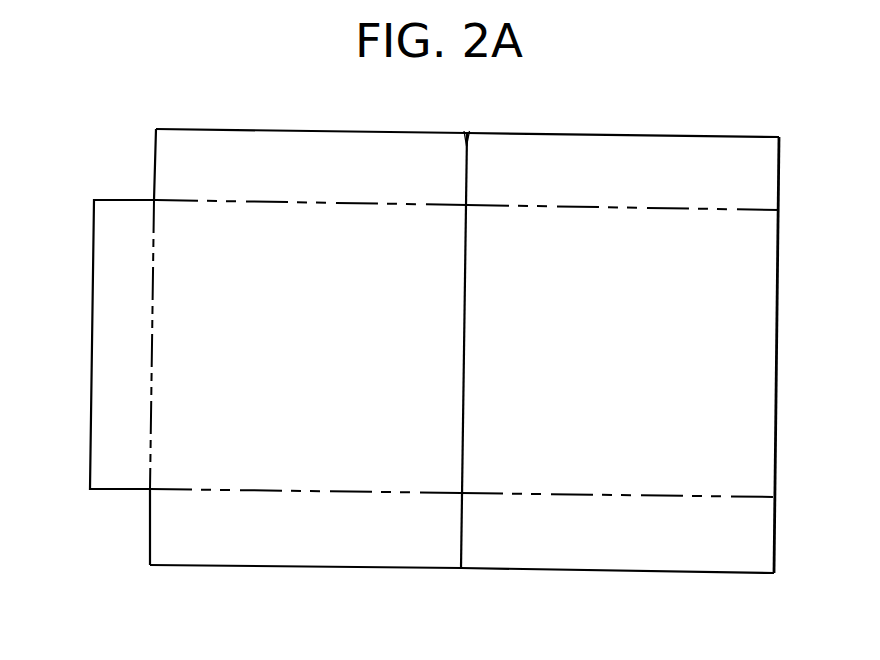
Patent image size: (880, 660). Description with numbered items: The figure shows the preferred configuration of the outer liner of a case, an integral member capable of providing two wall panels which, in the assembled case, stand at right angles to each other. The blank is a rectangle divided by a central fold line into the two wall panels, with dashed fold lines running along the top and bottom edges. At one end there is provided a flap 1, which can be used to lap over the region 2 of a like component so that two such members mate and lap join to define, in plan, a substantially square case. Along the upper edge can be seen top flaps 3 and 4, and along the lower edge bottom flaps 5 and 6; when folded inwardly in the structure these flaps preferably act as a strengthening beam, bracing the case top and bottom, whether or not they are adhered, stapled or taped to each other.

The flap 1 is at (108, 244).
The region 2 is at (762, 423).
The top flap 3 is at (322, 148).
The top flap 4 is at (636, 155).
The bottom flap 5 is at (317, 547).
The bottom flap 6 is at (630, 550).